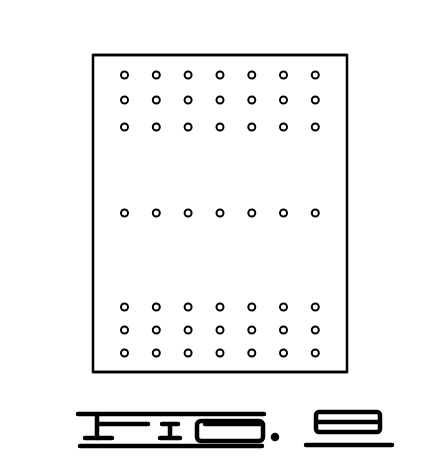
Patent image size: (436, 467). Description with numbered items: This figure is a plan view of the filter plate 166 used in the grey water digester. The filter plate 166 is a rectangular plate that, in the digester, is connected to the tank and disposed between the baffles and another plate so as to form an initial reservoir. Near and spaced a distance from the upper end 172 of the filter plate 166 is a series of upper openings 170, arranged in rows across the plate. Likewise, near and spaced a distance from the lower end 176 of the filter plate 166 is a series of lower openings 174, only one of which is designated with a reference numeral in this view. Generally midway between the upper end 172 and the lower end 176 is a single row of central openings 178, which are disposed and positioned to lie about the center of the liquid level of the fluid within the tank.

The filter plate 166 is at (93, 125).
The upper openings 170 is at (189, 72).
The upper end 172 is at (141, 55).
The lower openings 174 is at (157, 304).
The lower end 176 is at (190, 373).
The central openings 178 is at (123, 211).